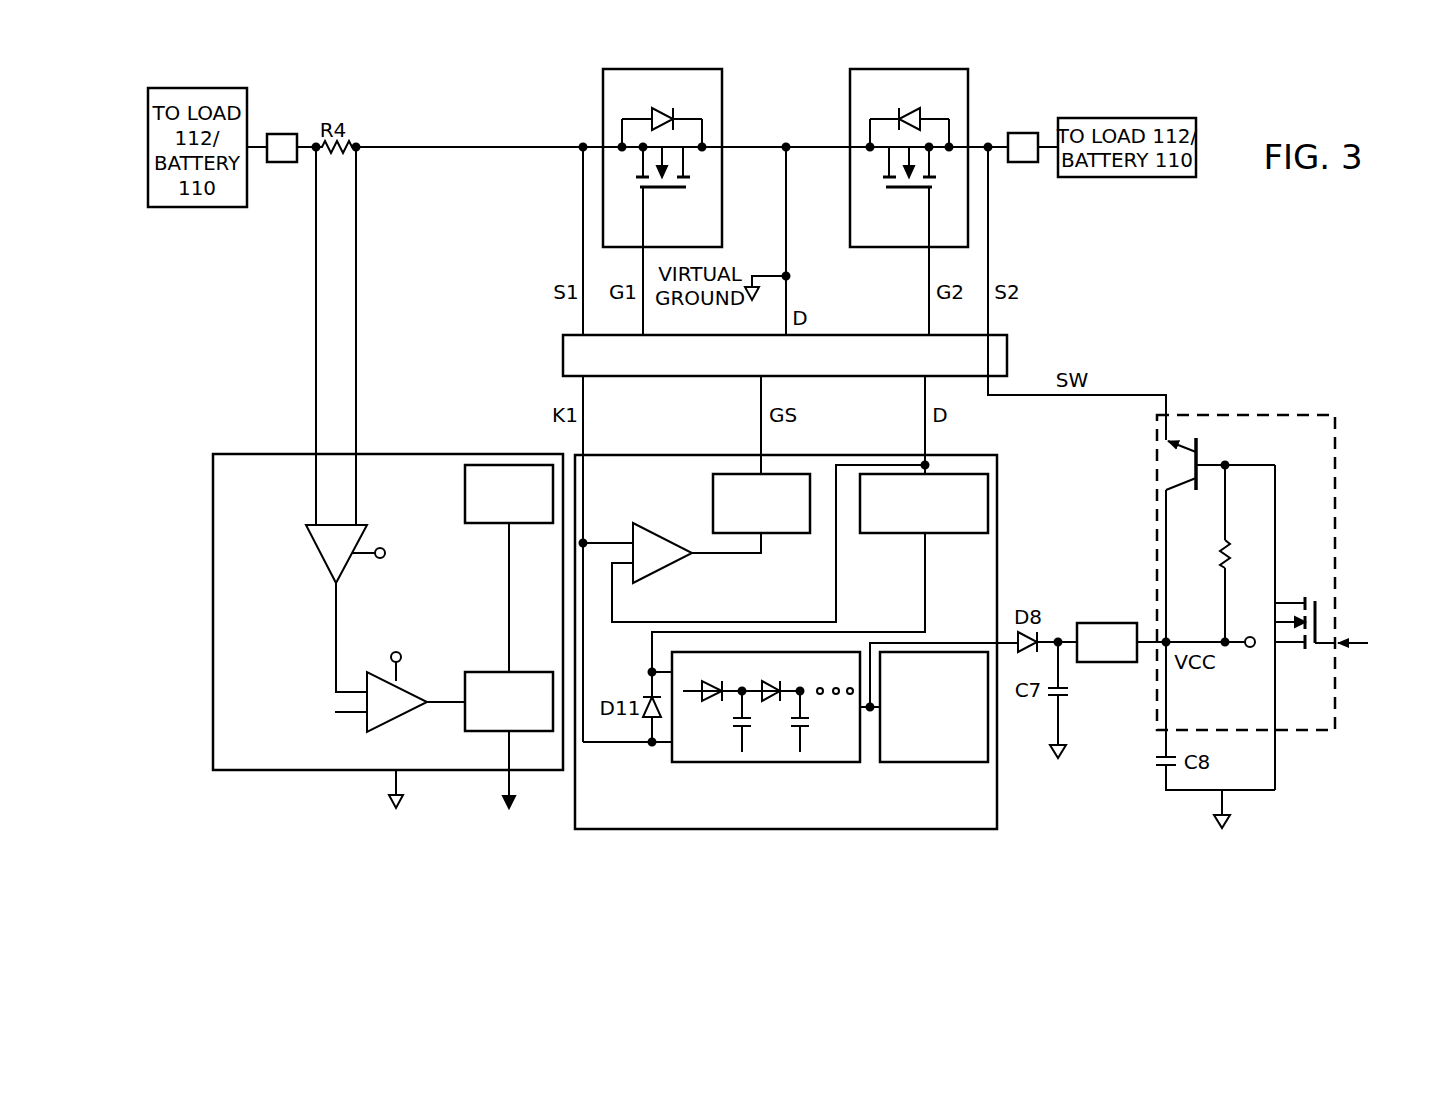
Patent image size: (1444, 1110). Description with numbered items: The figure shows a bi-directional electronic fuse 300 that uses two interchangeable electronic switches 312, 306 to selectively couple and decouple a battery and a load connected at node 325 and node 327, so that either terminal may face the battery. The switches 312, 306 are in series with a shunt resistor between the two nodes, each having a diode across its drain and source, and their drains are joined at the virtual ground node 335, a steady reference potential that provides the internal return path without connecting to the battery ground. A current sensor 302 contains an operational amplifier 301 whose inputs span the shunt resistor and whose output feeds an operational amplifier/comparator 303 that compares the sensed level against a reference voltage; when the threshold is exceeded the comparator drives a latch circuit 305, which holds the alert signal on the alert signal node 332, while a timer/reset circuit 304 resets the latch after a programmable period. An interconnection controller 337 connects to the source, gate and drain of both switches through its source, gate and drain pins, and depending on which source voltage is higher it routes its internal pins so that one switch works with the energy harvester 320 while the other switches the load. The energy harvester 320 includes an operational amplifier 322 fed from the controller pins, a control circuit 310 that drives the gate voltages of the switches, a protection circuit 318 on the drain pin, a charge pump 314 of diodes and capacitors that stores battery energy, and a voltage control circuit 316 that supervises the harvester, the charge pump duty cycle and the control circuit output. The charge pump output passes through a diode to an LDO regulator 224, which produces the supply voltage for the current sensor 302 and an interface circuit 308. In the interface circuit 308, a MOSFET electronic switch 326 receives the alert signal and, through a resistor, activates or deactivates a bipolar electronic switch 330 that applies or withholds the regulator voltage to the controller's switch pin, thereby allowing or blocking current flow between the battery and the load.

The bi-directional electronic fuse 300 is at (1291, 256).
The operational amplifier 301 is at (318, 555).
The current sensor 302 is at (274, 451).
The operational amplifier/comparator 303 is at (397, 718).
The timer/reset circuit 304 is at (463, 494).
The latch circuit 305 is at (493, 672).
The electronic switch 306 is at (899, 189).
The interface circuit 308 is at (1284, 410).
The control circuit 310 is at (713, 503).
The electronic switch 312 is at (672, 189).
The charge pump 314 is at (726, 767).
The voltage control circuit 316 is at (935, 764).
The protection circuit 318 is at (952, 535).
The energy harvester 320 is at (934, 833).
The operational amplifier 322 is at (665, 572).
The LDO regulator 224 is at (1107, 664).
The node 325 is at (283, 133).
The electronic switch 326 is at (1322, 603).
The node 327 is at (1023, 132).
The electronic switch 330 is at (1203, 449).
The alert signal node 332 is at (1355, 650).
The virtual ground node 335 is at (787, 296).
The interconnection controller 337 is at (1008, 353).